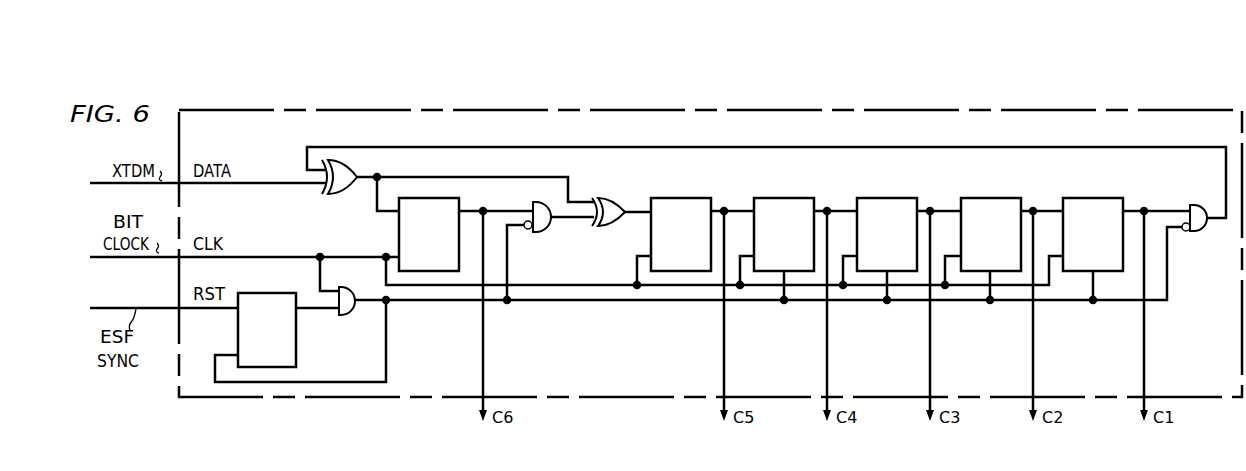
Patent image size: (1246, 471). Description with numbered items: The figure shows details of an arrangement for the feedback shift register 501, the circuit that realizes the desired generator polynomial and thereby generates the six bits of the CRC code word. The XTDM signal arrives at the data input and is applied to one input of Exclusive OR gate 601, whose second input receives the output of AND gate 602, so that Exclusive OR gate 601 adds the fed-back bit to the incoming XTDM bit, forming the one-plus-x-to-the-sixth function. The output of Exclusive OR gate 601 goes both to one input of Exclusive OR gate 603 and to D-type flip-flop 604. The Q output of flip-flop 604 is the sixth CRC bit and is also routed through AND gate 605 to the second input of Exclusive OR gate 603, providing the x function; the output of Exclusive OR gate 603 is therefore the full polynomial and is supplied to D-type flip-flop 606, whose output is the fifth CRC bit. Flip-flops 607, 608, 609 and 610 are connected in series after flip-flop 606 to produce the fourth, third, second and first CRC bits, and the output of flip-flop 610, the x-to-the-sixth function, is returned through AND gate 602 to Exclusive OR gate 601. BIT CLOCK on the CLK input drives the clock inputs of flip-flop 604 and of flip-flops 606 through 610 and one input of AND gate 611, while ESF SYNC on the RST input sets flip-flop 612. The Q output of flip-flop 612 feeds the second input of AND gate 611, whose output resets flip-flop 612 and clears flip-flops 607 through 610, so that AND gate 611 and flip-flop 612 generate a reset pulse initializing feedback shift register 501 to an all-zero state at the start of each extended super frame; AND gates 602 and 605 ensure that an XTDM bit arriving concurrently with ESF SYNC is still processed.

The feedback shift register 501 is at (178, 138).
The Exclusive OR gate 601 is at (347, 168).
The AND gate 602 is at (1192, 204).
The Exclusive OR gate 603 is at (607, 196).
The D-type flip-flop 604 is at (399, 228).
The AND gate 605 is at (544, 232).
The D-type flip-flop 606 is at (689, 197).
The D-type flip-flop 607 is at (795, 197).
The D-type flip-flop 608 is at (897, 197).
The D-type flip-flop 609 is at (1001, 197).
The D-type flip-flop 610 is at (1101, 197).
The AND gate 611 is at (345, 315).
The flip-flop 612 is at (297, 358).